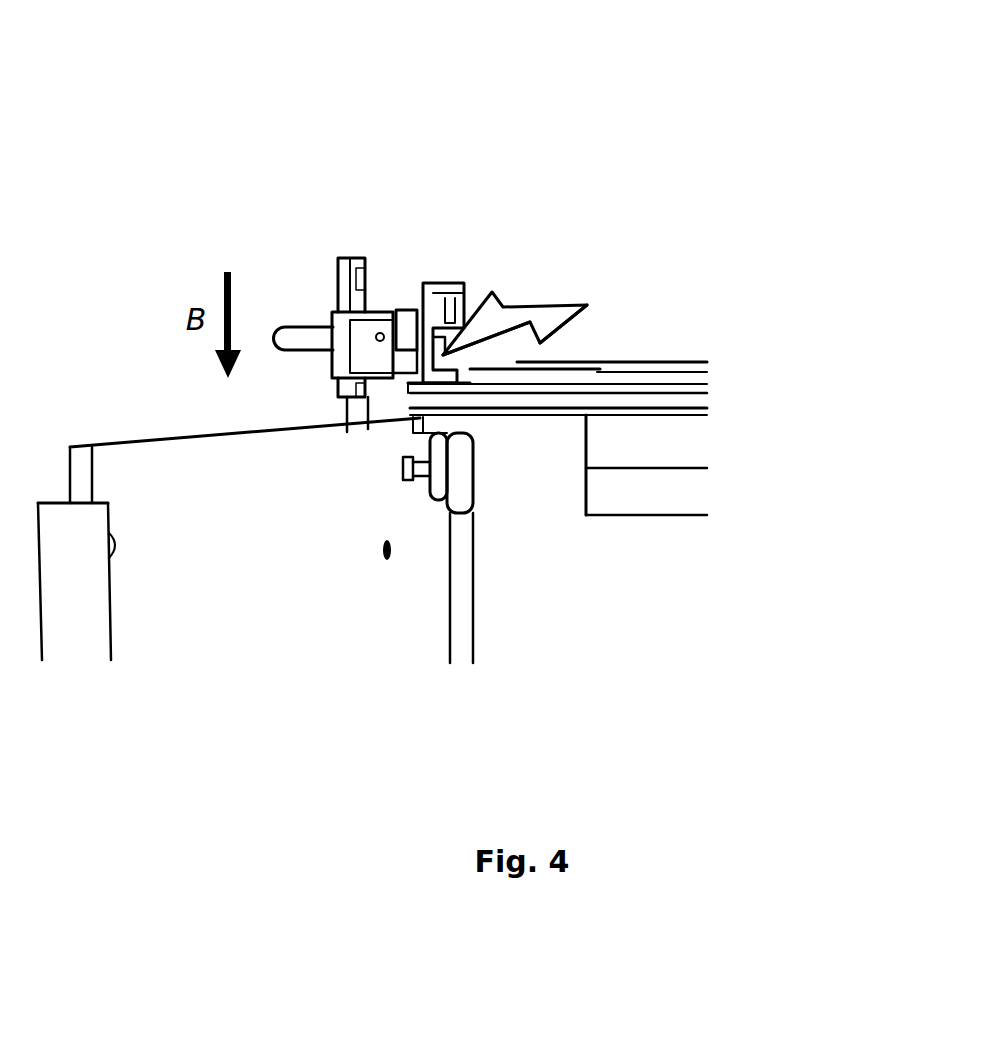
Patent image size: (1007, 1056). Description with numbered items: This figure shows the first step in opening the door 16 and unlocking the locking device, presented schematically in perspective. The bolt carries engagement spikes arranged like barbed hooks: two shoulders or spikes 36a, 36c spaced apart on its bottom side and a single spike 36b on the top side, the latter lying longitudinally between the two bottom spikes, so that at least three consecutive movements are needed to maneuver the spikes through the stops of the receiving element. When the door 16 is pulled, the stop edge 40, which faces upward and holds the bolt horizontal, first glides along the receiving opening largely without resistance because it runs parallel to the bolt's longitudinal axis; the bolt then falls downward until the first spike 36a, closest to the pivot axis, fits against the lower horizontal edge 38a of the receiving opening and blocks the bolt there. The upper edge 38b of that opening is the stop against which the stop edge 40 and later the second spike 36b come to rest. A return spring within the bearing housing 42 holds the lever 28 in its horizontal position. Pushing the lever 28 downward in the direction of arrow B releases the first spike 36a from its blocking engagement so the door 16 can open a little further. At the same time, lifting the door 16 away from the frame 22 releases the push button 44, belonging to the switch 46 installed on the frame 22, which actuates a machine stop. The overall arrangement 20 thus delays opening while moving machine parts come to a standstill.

The door 16 is at (251, 613).
The clamp assembly 20 is at (163, 143).
The frame 22 is at (668, 456).
The lever 28 is at (285, 343).
The first spike 36a is at (548, 368).
The second spike 36b is at (507, 290).
The spike 36c is at (543, 328).
The lower horizontal edge 38a is at (473, 347).
The upper edge 38b is at (465, 287).
The stop edge 40 is at (409, 303).
The bearing housing 42 is at (367, 368).
The push button 44 is at (393, 477).
The switch 46 is at (430, 503).